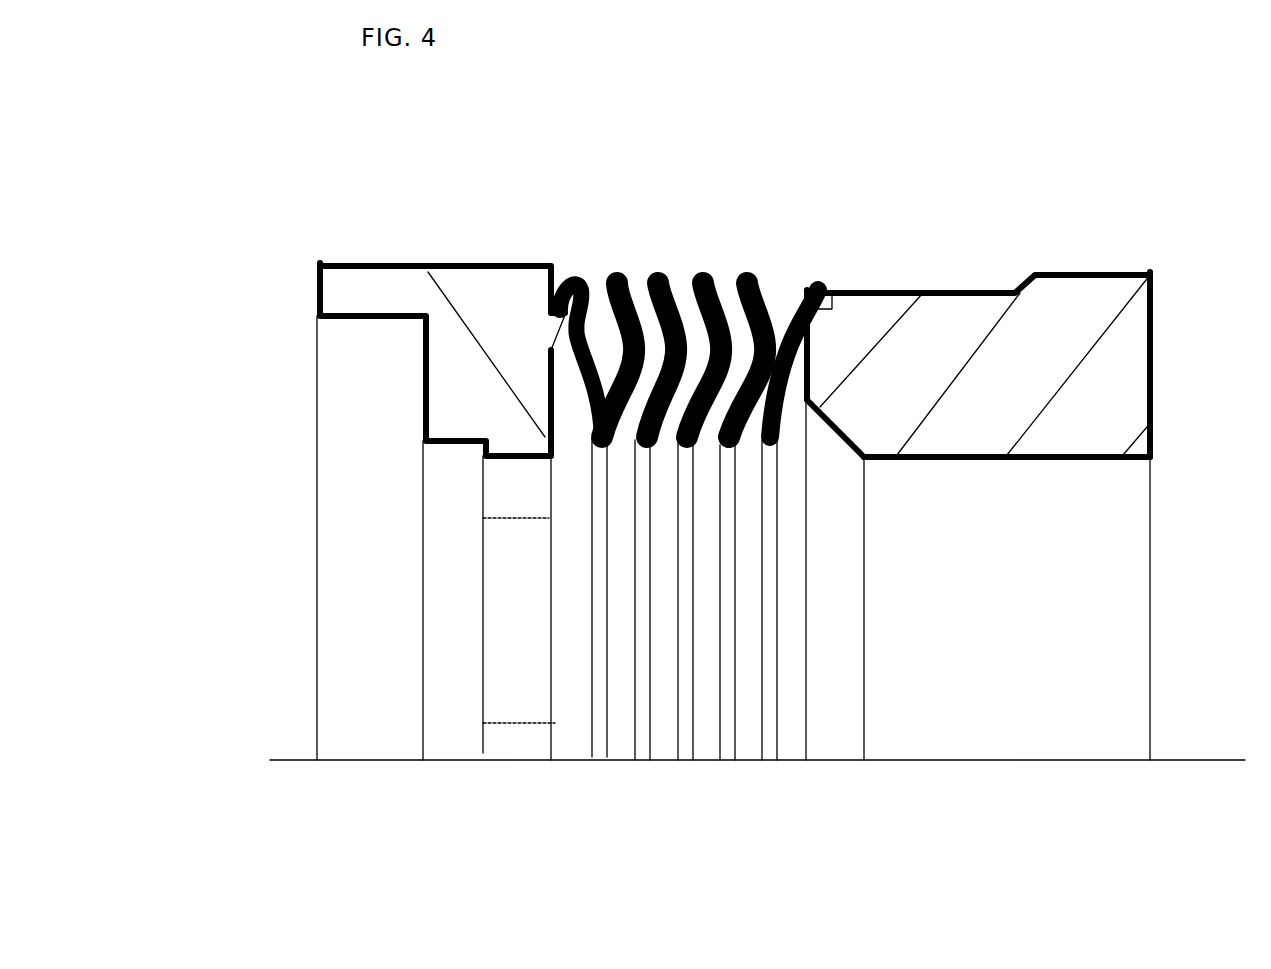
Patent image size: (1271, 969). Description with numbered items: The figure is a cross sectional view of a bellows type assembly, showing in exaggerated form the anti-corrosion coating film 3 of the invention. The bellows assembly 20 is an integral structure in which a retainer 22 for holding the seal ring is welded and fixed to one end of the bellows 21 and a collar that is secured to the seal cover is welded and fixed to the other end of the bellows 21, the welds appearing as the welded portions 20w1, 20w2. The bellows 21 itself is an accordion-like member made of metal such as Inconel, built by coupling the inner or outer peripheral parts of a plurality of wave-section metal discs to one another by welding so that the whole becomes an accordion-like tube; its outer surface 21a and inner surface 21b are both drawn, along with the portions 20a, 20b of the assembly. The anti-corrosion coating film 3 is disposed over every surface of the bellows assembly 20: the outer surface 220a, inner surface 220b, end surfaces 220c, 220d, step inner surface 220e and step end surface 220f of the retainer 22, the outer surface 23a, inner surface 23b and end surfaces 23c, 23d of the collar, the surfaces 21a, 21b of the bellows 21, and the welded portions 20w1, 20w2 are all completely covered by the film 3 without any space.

The anti-corrosion coating film 3 is at (365, 318).
The bellows assembly 20 is at (808, 250).
The first portion 20a is at (551, 486).
The second portion 20b is at (500, 727).
The welded portion 20w1 is at (583, 282).
The welded portion 20w2 is at (810, 298).
The bellows 21 is at (670, 293).
The outer surface 21a is at (713, 295).
The inner surface 21b is at (678, 463).
The retainer 22 is at (460, 295).
The outer surface 220a is at (552, 347).
The inner surface 220b is at (480, 441).
The end surface 220c is at (316, 292).
The end surface 220d is at (560, 330).
The step inner surface 220e is at (347, 320).
The step end surface 220f is at (423, 383).
The outer surface 23a is at (996, 293).
The inner surface 23b is at (1060, 462).
The end surface 23c is at (1153, 318).
The end surface 23d is at (808, 355).